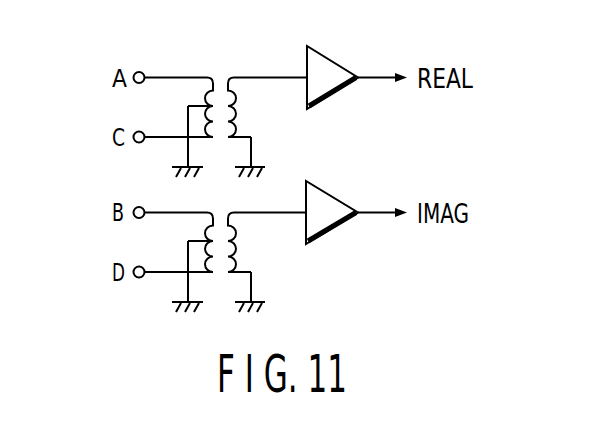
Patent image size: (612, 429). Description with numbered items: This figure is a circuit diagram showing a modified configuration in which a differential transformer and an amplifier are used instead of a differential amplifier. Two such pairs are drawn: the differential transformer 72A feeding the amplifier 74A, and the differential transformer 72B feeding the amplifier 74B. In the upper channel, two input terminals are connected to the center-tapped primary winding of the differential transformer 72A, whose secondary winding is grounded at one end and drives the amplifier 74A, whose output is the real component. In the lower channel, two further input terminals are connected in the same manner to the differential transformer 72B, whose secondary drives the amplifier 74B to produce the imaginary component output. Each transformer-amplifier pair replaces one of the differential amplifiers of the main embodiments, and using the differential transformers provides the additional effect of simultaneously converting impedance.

The differential transformer 72A is at (220, 74).
The differential transformer 72B is at (240, 239).
The amplifier 74A is at (332, 58).
The amplifier 74B is at (332, 193).